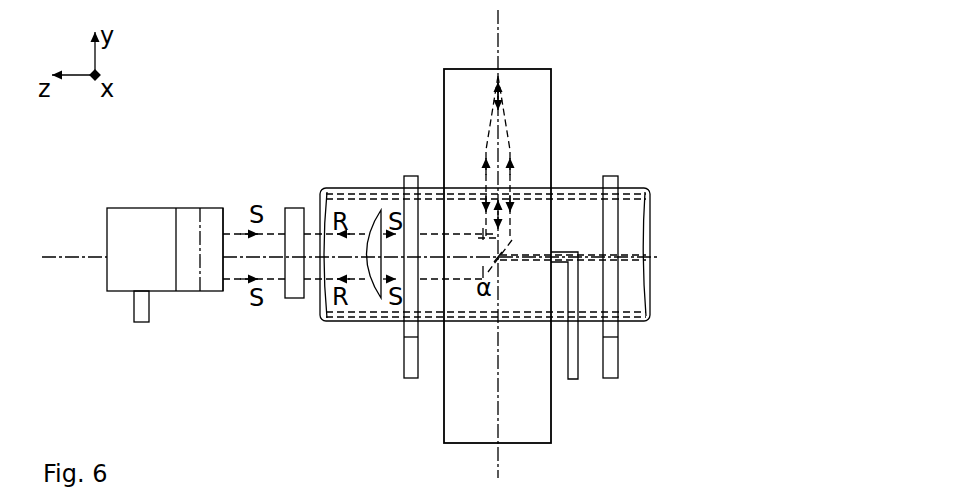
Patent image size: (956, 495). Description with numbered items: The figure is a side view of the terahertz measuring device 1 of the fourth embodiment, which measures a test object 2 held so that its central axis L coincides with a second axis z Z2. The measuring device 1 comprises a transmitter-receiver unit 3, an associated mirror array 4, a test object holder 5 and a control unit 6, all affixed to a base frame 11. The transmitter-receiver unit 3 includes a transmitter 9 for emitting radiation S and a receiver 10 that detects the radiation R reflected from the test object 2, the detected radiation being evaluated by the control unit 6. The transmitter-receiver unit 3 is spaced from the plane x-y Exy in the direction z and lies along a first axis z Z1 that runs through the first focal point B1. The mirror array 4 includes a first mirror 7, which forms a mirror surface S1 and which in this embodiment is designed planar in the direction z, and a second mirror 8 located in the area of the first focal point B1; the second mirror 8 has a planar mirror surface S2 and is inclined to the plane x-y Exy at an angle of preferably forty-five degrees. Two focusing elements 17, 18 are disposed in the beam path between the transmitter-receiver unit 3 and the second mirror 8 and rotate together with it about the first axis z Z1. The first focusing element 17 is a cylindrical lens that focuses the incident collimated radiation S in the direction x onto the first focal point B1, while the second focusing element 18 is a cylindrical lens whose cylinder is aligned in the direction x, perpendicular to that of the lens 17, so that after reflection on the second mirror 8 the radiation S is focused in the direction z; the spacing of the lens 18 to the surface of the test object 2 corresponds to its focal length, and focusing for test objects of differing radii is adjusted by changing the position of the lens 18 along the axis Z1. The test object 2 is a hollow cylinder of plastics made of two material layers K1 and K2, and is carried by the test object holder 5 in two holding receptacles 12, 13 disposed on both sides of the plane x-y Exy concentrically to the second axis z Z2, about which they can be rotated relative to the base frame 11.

The measuring device 1 is at (258, 66).
The test object 2 is at (645, 188).
The transmitter-receiver unit 3 is at (200, 206).
The mirror array 4 is at (566, 393).
The test object holder 5 is at (385, 164).
The control unit 6 is at (131, 222).
The first mirror 7 is at (444, 398).
The second mirror 8 is at (506, 246).
The transmitter 9 is at (214, 291).
The receiver 10 is at (187, 291).
The base frame 11 is at (141, 323).
The holding receptacle 12 is at (412, 176).
The holding receptacle 13 is at (612, 176).
The first focusing element 17 is at (292, 218).
The second focusing element 18 is at (378, 222).
The first axis z Z1 is at (72, 257).
The second axis z Z2 is at (626, 257).
The central axis L is at (684, 236).
The first focal point B1 is at (505, 259).
The material layer K1 is at (652, 318).
The material layer K2 is at (650, 313).
The mirror surface S1 is at (462, 443).
The mirror surface S2 is at (482, 268).
The plane x-y Exy is at (495, 37).